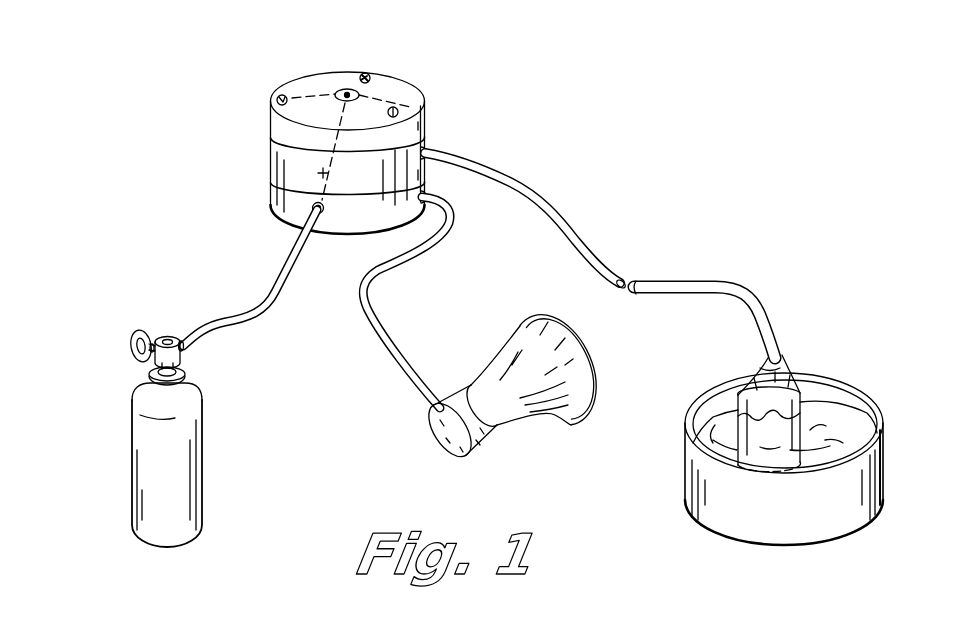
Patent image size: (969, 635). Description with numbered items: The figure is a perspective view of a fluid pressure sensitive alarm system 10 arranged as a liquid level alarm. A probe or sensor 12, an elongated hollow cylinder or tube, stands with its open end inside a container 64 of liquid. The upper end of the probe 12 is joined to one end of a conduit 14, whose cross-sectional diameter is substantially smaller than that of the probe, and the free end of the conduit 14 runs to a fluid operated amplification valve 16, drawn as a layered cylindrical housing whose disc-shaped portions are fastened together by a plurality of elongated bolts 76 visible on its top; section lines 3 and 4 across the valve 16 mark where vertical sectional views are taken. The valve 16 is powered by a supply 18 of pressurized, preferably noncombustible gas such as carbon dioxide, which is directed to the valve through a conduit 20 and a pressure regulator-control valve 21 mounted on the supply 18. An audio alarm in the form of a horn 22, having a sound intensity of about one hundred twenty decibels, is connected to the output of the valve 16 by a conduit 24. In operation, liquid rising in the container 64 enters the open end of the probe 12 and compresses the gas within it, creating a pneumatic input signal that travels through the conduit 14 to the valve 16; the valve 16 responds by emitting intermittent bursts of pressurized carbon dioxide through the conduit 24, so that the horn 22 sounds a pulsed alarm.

The pressure sensitive alarm system 10 is at (515, 71).
The probe or sensor 12 is at (806, 380).
The conduit 14 is at (586, 248).
The fluid operated amplification valve 16 is at (357, 214).
The gas supply 18 is at (190, 427).
The conduit 20 is at (240, 330).
The pressure regulator-control valve 21 is at (118, 347).
The horn 22 is at (508, 382).
The conduit 24 is at (388, 330).
The container 64 is at (685, 460).
The elongated bolts 76 is at (287, 98).
The section line 3- 3 is at (400, 80).
The section line 4- 4 is at (463, 160).